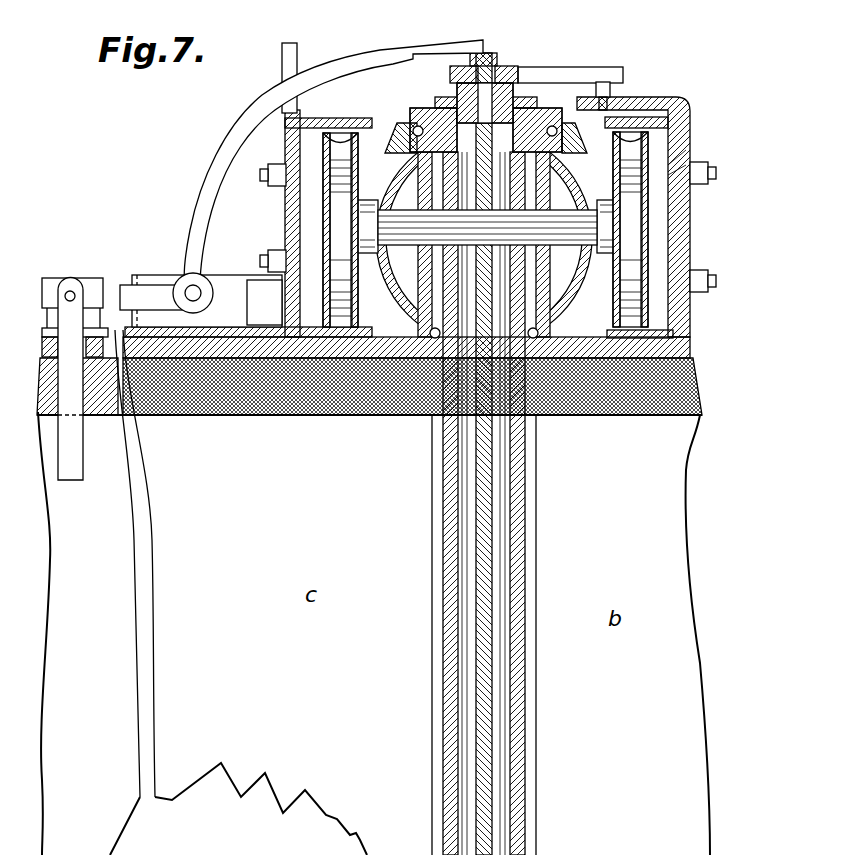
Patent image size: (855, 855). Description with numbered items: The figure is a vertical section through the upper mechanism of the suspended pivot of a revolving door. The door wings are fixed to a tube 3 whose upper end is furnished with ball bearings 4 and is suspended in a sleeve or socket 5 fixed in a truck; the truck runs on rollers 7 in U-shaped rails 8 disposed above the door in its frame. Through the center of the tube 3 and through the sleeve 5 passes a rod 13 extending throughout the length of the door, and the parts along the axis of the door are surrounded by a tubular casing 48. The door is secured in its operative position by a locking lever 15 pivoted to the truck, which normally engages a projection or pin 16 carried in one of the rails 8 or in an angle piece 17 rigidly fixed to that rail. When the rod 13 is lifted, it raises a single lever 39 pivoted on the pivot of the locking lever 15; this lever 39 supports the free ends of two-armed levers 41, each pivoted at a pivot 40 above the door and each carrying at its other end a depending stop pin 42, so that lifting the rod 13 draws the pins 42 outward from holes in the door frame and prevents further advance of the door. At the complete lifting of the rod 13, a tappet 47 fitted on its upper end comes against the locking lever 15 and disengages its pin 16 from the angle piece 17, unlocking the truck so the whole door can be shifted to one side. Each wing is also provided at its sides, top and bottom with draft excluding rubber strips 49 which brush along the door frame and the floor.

The tube 3 is at (537, 420).
The ball bearings 4 is at (568, 108).
The sleeve or socket 5 is at (566, 282).
The rollers 7 is at (330, 214).
The U-shaped rails 8 is at (286, 205).
The rod 13 is at (493, 75).
The locking lever 15 is at (450, 72).
The projection or pin 16 is at (610, 88).
The angle piece 17 is at (678, 100).
The single lever 39 is at (487, 56).
The pivot 40 is at (187, 291).
The two-armed levers 41 is at (386, 50).
The stop pin 42 is at (72, 481).
The tappet 47 is at (457, 100).
The tubular casing 48 is at (526, 810).
The draft excluding rubber strips 49 is at (337, 393).